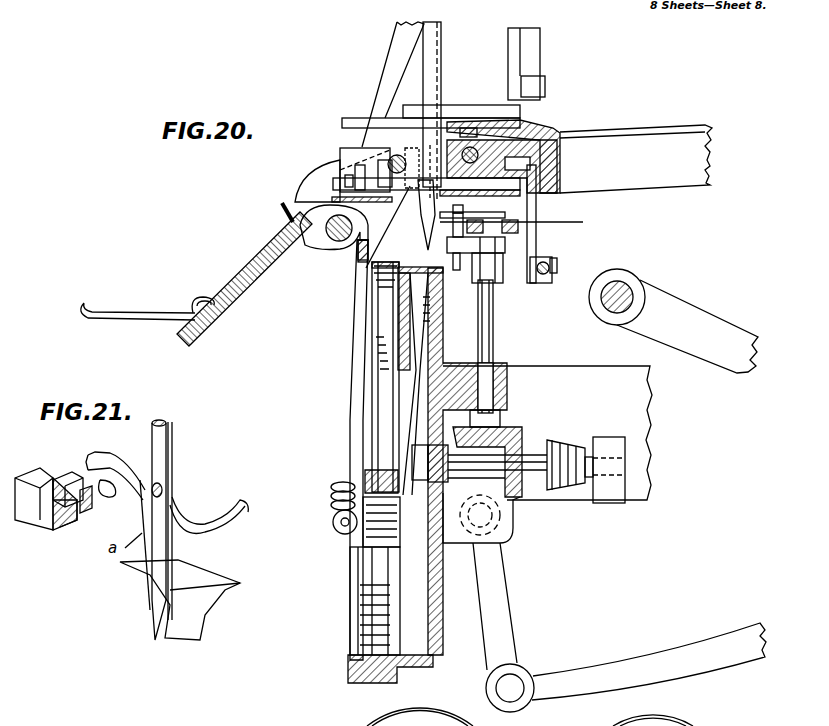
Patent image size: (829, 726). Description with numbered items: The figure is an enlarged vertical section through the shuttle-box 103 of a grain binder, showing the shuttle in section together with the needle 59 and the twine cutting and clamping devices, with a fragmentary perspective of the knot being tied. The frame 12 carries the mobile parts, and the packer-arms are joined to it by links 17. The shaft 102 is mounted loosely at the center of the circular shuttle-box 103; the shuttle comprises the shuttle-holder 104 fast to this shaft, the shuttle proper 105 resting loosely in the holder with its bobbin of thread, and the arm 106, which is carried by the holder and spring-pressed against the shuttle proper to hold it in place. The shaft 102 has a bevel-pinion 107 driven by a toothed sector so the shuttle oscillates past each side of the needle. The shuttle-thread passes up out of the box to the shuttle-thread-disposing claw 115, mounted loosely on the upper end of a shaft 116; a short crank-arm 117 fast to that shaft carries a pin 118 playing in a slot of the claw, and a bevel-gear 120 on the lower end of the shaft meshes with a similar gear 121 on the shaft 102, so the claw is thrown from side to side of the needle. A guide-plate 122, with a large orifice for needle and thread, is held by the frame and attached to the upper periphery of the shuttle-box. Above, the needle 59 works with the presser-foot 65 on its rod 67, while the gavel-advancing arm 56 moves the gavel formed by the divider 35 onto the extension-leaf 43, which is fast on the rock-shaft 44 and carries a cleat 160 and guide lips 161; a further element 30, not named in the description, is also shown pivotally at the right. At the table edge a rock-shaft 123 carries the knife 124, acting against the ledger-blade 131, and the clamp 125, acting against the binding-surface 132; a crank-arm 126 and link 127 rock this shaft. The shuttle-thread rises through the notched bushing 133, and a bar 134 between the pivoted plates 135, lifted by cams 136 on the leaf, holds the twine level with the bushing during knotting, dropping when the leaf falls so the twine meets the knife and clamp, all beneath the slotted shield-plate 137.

In FIG. 20, the gavel-advancing arm 56 is at (420, 44).
In FIG. 20, the needle 59 is at (434, 80).
In FIG. 21, the needle 59 is at (162, 455).
In FIG. 20, the rod 67 is at (532, 62).
In FIG. 20, the notched bushing 133 is at (545, 92).
In FIG. 20, the presser-foot 65 is at (470, 106).
In FIG. 20, the slotted shield-plate 137 is at (540, 130).
In FIG. 20, the bar 134 is at (398, 154).
In FIG. 21, the bar 134 is at (104, 460).
In FIG. 20, the knife 124 is at (352, 172).
In FIG. 20, the plates 135 is at (343, 181).
In FIG. 20, the rock-shaft 123 is at (507, 196).
In FIG. 20, the shuttle-thread-disposing claw 115 is at (525, 218).
In FIG. 21, the shuttle-thread-disposing claw 115 is at (216, 523).
In FIG. 20, the crank-arm 126 is at (536, 247).
In FIG. 20, the link 127 is at (552, 267).
In FIG. 20, the crank-arm 117 is at (482, 248).
In FIG. 20, the pin 118 is at (456, 270).
In FIG. 20, the shaft 116 is at (494, 322).
In FIG. 20, the rock-shaft 44 is at (340, 242).
In FIG. 20, the cams 136 is at (322, 233).
In FIG. 20, the extension-leaf 43 is at (196, 332).
In FIG. 20, the lips 161 is at (283, 205).
In FIG. 20, the cleat 160 is at (200, 297).
In FIG. 20, the arm 106 is at (352, 382).
In FIG. 20, the shuttle proper 105 is at (382, 377).
In FIG. 21, the shuttle proper 105 is at (180, 600).
In FIG. 20, the guide-plate 122 is at (380, 276).
In FIG. 20, the frame 12 is at (547, 433).
In FIG. 20, the bevel-gear 120 is at (510, 428).
In FIG. 20, the shaft 102 is at (474, 476).
In FIG. 20, the bevel-pinion 107 is at (570, 445).
In FIG. 20, the bevel-gear 121 is at (515, 503).
In FIG. 20, the links 17 is at (503, 586).
In FIG. 20, the shuttle-holder 104 is at (358, 526).
In FIG. 20, the shuttle-box 103 is at (390, 615).
In FIG. 20, the pivot 30 is at (627, 288).
In FIG. 20, the divider 35 is at (687, 326).
In FIG. 21, the ledger-blade 131 is at (40, 512).
In FIG. 21, the binding-surface 132 is at (76, 522).
In FIG. 21, the clamp 125 is at (70, 470).